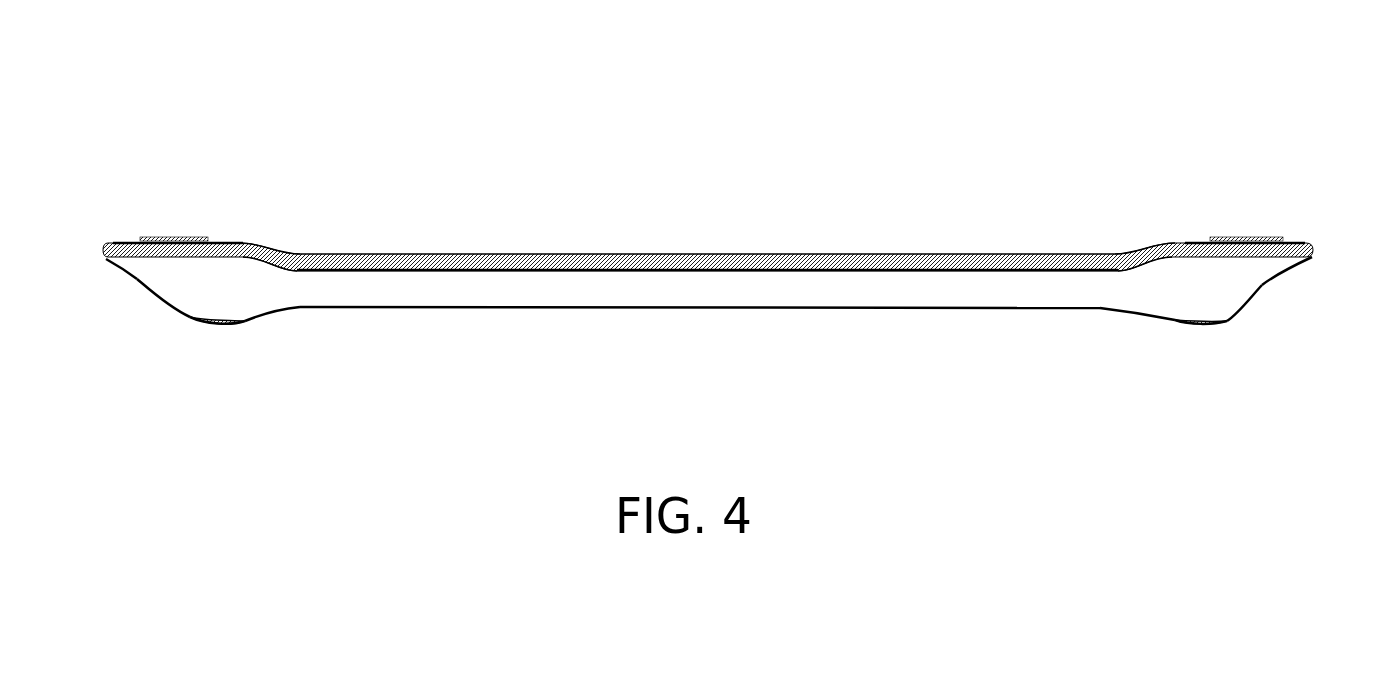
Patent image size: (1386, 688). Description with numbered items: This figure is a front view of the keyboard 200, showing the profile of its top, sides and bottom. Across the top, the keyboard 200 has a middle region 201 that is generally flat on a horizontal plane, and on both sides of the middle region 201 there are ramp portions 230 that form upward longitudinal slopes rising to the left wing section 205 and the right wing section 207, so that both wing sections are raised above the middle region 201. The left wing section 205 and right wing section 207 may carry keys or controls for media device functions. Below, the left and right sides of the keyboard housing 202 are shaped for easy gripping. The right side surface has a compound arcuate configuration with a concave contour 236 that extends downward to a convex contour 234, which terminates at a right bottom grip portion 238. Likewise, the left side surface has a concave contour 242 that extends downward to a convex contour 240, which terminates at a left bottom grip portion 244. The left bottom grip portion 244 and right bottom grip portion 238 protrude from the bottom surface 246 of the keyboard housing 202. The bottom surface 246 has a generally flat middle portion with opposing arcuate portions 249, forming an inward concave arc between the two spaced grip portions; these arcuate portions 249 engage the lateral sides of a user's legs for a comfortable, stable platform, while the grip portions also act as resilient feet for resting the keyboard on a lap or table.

The keyboard 200 is at (833, 110).
The middle region 201 is at (620, 253).
The keyboard housing 202 is at (709, 354).
The left wing section 205 is at (175, 225).
The right wing section 207 is at (1243, 225).
The ramp portions 230 is at (278, 252).
The convex contour 234 is at (1240, 303).
The concave contour 236 is at (1270, 273).
The right bottom grip portion 238 is at (1190, 320).
The convex contour 240 is at (165, 305).
The concave contour 242 is at (137, 270).
The left bottom grip portion 244 is at (208, 328).
The bottom surface 246 is at (543, 307).
The arcuate portions 249 is at (282, 302).